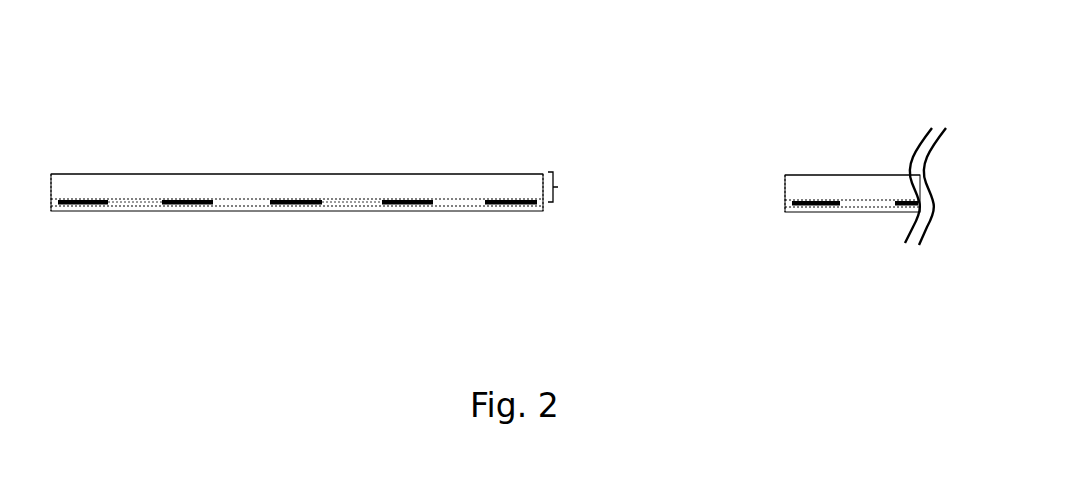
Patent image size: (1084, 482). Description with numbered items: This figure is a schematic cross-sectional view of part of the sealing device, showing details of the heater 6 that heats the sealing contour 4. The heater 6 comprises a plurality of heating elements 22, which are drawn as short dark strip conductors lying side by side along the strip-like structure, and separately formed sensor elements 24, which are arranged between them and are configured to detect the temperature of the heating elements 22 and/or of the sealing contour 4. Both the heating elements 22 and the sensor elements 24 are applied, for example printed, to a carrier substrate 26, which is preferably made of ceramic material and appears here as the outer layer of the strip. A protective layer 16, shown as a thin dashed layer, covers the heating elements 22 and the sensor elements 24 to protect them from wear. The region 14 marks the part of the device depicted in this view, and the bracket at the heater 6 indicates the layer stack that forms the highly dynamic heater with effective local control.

The sealing contour 4 is at (550, 207).
The heater 6 is at (566, 187).
The strip section 14 is at (677, 130).
The protective layer 16 is at (247, 213).
The heating elements 22 is at (85, 200).
The sensor elements 24 is at (187, 205).
The carrier substrate 26 is at (205, 183).